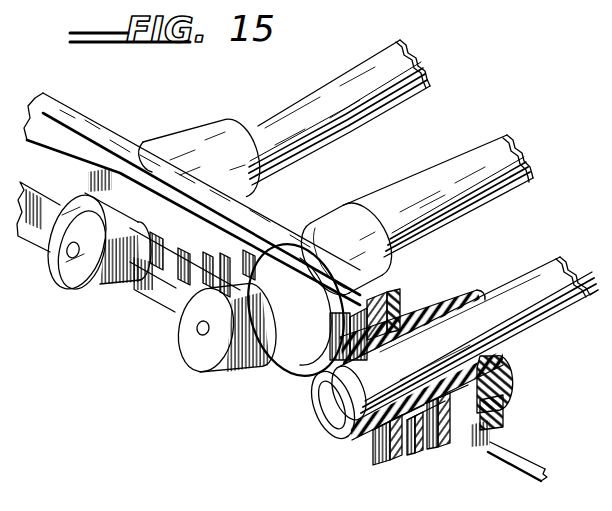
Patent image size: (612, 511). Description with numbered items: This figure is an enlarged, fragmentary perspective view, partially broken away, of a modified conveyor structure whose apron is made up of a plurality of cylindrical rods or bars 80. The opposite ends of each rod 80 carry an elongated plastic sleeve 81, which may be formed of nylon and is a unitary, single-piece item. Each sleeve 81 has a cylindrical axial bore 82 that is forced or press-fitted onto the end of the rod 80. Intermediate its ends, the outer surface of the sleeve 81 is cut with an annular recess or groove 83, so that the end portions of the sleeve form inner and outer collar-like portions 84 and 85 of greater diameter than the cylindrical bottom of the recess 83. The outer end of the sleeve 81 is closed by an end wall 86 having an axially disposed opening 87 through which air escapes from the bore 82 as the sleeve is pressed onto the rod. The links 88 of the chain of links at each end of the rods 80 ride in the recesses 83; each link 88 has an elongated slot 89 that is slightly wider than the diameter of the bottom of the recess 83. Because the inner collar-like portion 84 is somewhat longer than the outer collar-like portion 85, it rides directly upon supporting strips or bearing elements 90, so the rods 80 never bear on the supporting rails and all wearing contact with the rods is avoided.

The cylindrical rod 80 is at (484, 142).
The sleeve 81 is at (318, 212).
The cylindrical axial bore 82 is at (498, 339).
The annular recess 83 is at (137, 283).
The inner collar-like portion 84 is at (201, 131).
The outer collar-like portion 85 is at (90, 218).
The end wall 86 is at (207, 355).
The axially disposed opening 87 is at (199, 331).
The link 88 is at (137, 293).
The elongated slot 89 is at (177, 288).
The supporting strip 90 is at (505, 400).